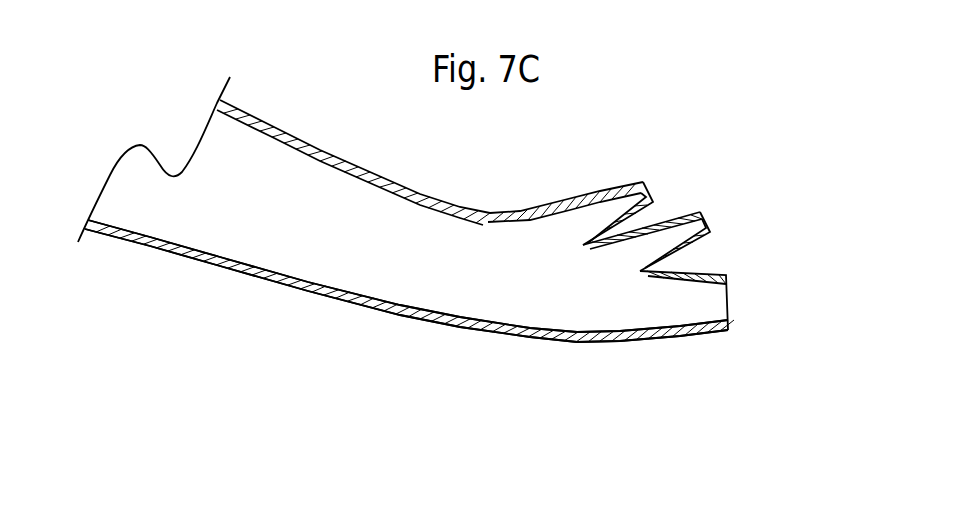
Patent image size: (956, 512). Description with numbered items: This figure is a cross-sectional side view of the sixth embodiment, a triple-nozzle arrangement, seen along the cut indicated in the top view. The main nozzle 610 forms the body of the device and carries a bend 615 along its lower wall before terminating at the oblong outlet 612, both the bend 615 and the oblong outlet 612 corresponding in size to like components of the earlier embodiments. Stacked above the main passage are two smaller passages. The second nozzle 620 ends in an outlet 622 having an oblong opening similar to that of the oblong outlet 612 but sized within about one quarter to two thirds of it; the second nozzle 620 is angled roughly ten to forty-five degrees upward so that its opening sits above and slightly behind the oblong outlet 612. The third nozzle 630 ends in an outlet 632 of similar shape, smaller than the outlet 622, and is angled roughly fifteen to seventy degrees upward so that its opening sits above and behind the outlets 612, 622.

The main nozzle 610 is at (307, 291).
The bend 615 is at (523, 338).
The third nozzle 630 is at (575, 199).
The outlet 632 is at (655, 200).
The second nozzle 620 is at (684, 206).
The outlet 622 is at (713, 221).
The oblong outlet 612 is at (729, 314).